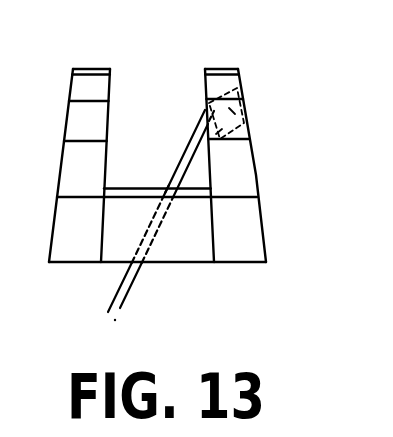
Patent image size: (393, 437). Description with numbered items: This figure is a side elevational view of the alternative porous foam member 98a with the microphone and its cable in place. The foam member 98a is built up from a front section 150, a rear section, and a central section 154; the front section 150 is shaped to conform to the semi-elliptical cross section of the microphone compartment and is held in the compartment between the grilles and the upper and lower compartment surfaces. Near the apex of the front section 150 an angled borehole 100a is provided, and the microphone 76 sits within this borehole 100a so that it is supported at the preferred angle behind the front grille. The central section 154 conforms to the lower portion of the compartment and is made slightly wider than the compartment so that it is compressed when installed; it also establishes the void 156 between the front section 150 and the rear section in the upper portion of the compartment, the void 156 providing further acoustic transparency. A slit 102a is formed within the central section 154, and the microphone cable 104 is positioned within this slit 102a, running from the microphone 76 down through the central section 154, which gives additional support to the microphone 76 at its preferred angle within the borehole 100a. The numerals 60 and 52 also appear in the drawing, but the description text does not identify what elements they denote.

The support member 60 is at (55, 58).
The foam member 98a is at (55, 152).
The void 156 is at (167, 110).
The slit 102a is at (161, 179).
The angled borehole 100a is at (186, 179).
The microphone 76 is at (243, 110).
The front section 150 is at (272, 165).
The base 52 is at (133, 260).
The central section 154 is at (110, 264).
The microphone cable 104 is at (180, 217).